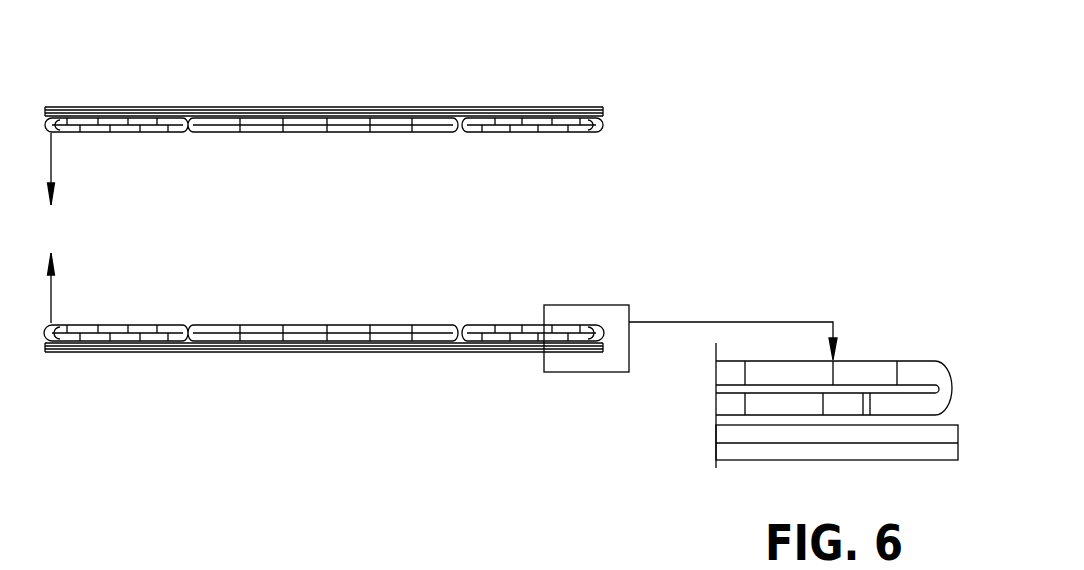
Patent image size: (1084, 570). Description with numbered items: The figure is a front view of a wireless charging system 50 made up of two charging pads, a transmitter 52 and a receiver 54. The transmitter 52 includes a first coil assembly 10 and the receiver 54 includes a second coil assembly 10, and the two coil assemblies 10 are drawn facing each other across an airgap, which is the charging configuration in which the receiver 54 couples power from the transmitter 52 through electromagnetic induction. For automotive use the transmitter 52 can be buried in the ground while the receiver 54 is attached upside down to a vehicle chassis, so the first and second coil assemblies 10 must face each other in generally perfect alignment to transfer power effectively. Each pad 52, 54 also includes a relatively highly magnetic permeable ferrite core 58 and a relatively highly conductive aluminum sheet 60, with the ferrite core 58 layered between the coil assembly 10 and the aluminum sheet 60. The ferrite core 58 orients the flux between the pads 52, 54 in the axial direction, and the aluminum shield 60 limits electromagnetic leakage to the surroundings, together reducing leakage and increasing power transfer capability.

The coil assembly 10 is at (612, 118).
The wireless charging system 50 is at (777, 147).
The transmitter 52 is at (133, 365).
The receiver 54 is at (607, 92).
The ferrite core 58 is at (375, 417).
The aluminum sheet 60 is at (365, 492).